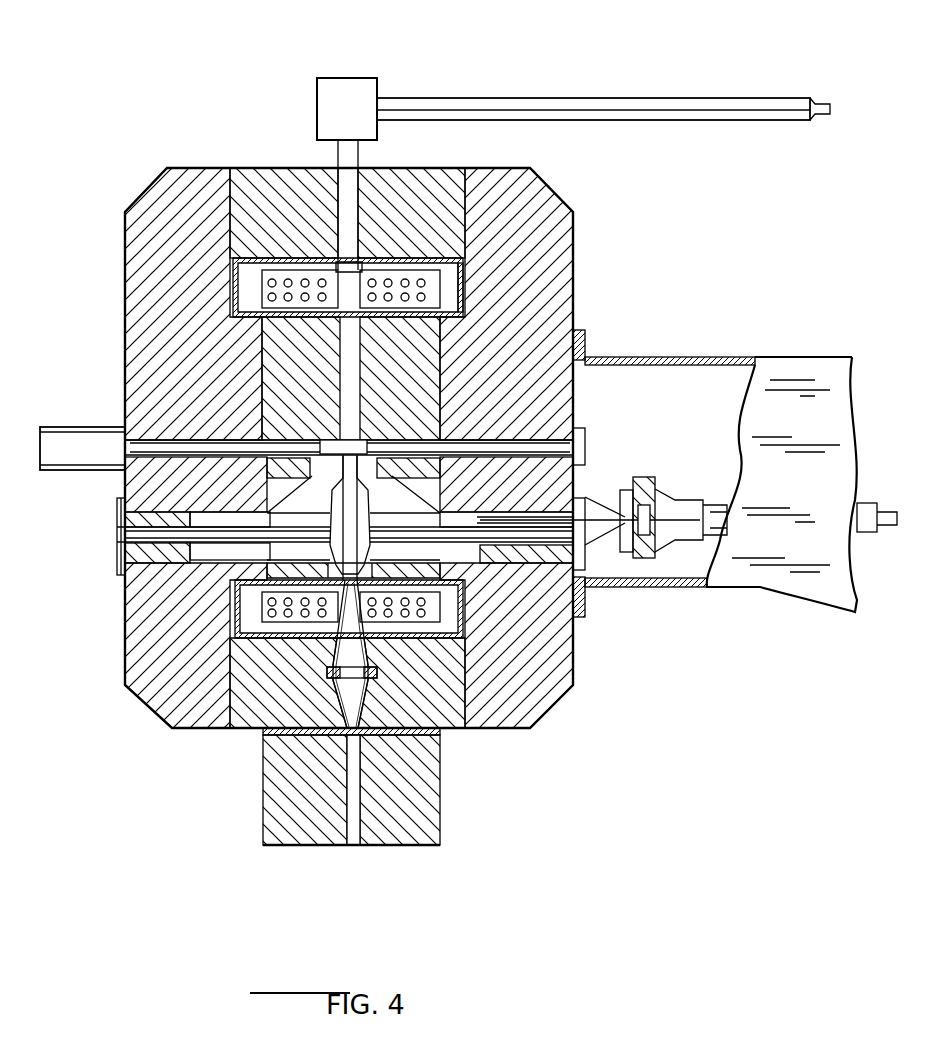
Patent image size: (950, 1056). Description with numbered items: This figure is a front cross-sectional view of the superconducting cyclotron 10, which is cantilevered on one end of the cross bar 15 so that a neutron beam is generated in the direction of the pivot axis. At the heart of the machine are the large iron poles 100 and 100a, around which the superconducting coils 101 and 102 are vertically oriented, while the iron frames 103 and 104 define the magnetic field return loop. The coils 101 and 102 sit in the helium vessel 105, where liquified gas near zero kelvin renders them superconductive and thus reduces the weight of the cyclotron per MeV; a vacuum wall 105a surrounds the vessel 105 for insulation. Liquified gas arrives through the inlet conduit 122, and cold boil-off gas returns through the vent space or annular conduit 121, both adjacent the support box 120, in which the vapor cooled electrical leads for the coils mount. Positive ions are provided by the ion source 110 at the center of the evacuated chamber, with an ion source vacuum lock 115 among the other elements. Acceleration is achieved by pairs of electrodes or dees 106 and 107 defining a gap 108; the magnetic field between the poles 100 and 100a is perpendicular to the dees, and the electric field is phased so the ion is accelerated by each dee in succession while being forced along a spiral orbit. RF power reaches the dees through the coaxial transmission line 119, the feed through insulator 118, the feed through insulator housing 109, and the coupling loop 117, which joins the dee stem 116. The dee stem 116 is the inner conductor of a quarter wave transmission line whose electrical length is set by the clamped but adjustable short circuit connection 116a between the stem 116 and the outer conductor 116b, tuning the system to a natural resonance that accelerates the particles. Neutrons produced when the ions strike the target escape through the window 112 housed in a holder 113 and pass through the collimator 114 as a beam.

The superconducting cyclotron 10 is at (590, 203).
The cross bar 15 is at (790, 360).
The iron pole 100 is at (416, 359).
The iron pole 100a is at (334, 359).
The superconducting coil 101 is at (388, 280).
The superconducting coil 102 is at (306, 278).
The iron frame 103 is at (553, 290).
The iron frame 104 is at (125, 271).
The helium vessel 105 is at (432, 287).
The vacuum wall 105a is at (467, 293).
The dee 106 is at (368, 502).
The dee 107 is at (335, 500).
The gap 108 is at (352, 477).
The feed through insulator housing 109 is at (637, 477).
The ion source 110 is at (357, 428).
The window 112 is at (360, 740).
The holder 113 is at (333, 653).
The collimator 114 is at (417, 797).
The ion source vacuum lock 115 is at (69, 445).
The dee stem 116 is at (138, 534).
The short circuit connection 116a is at (172, 572).
The outer conductor 116b is at (190, 568).
The RF coupling loop 117 is at (540, 518).
The RF feed through insulator 118 is at (652, 558).
The RF coaxial transmission line 119 is at (862, 502).
The support box 120 is at (350, 78).
The vent space or annular conduit 121 is at (470, 98).
The conduit 122 is at (830, 104).